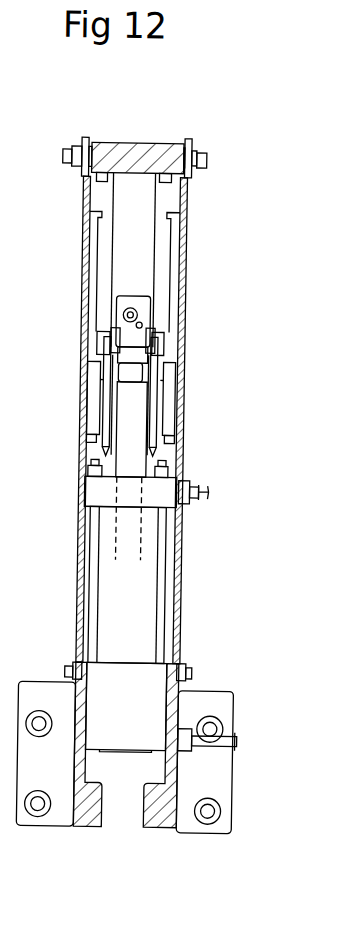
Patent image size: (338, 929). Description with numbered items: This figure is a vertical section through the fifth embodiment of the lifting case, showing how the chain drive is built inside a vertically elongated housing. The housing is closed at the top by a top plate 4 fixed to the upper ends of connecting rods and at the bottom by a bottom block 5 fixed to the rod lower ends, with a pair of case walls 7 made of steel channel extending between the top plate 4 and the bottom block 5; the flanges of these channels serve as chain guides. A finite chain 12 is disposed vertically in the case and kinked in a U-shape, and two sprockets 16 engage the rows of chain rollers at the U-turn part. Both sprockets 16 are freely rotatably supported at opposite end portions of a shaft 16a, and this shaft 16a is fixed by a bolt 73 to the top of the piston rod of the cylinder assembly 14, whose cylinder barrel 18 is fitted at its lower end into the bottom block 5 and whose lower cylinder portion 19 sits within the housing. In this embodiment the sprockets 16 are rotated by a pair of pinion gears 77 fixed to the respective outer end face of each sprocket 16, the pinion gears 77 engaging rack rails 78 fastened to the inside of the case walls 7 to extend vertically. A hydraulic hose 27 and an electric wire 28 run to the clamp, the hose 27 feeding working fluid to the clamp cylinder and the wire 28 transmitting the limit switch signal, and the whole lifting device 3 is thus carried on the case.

The lifting device 3 is at (201, 142).
The top plate 4 is at (153, 147).
The bottom block 5 is at (94, 813).
The case walls 7 is at (184, 195).
The chain 12 is at (95, 340).
The cylinder assembly 14 is at (170, 562).
The sprockets 16 is at (102, 368).
The shaft 16a is at (100, 387).
The cylinder barrel 18 is at (146, 488).
The cylinder 19 is at (152, 570).
The hydraulic hose 27 is at (139, 310).
The electric wire 28 is at (141, 325).
The bolt 73 is at (140, 372).
The pinion gears 77 is at (92, 418).
The rack rails 78 is at (88, 439).